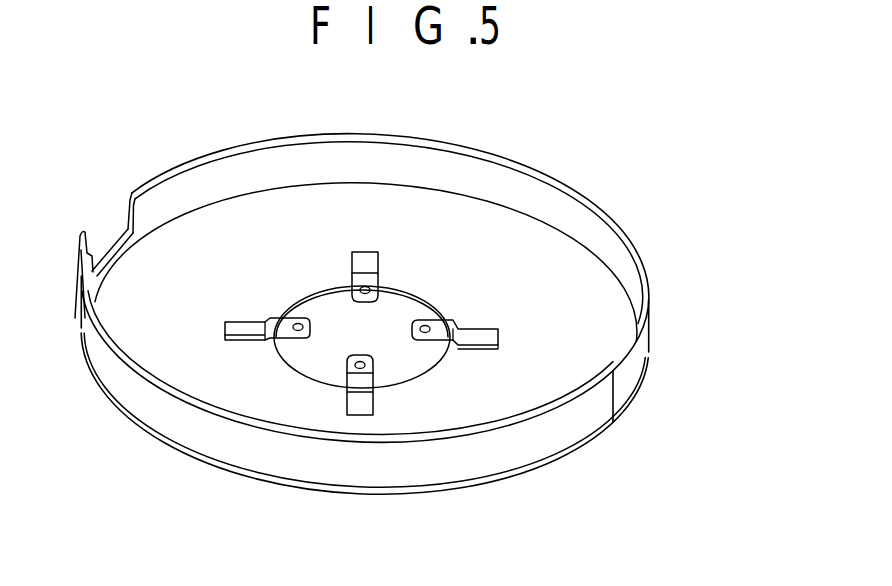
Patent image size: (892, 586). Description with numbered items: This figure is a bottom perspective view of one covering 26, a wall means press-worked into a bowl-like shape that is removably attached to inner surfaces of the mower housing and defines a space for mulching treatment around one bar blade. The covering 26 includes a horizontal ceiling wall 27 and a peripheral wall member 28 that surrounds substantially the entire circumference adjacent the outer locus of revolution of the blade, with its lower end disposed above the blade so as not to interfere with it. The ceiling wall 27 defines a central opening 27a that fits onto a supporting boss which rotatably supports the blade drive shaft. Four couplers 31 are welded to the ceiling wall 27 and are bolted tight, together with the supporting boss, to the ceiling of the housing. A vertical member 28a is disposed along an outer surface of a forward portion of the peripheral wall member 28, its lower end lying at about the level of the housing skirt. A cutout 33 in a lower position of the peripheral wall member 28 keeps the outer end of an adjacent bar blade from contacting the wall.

The covering 26 is at (651, 239).
The ceiling wall 27 is at (412, 207).
The opening 27a is at (332, 321).
The peripheral wall member 28 is at (574, 192).
The vertical member 28a is at (198, 432).
The couplers 31 is at (421, 320).
The cutout 33 is at (104, 232).